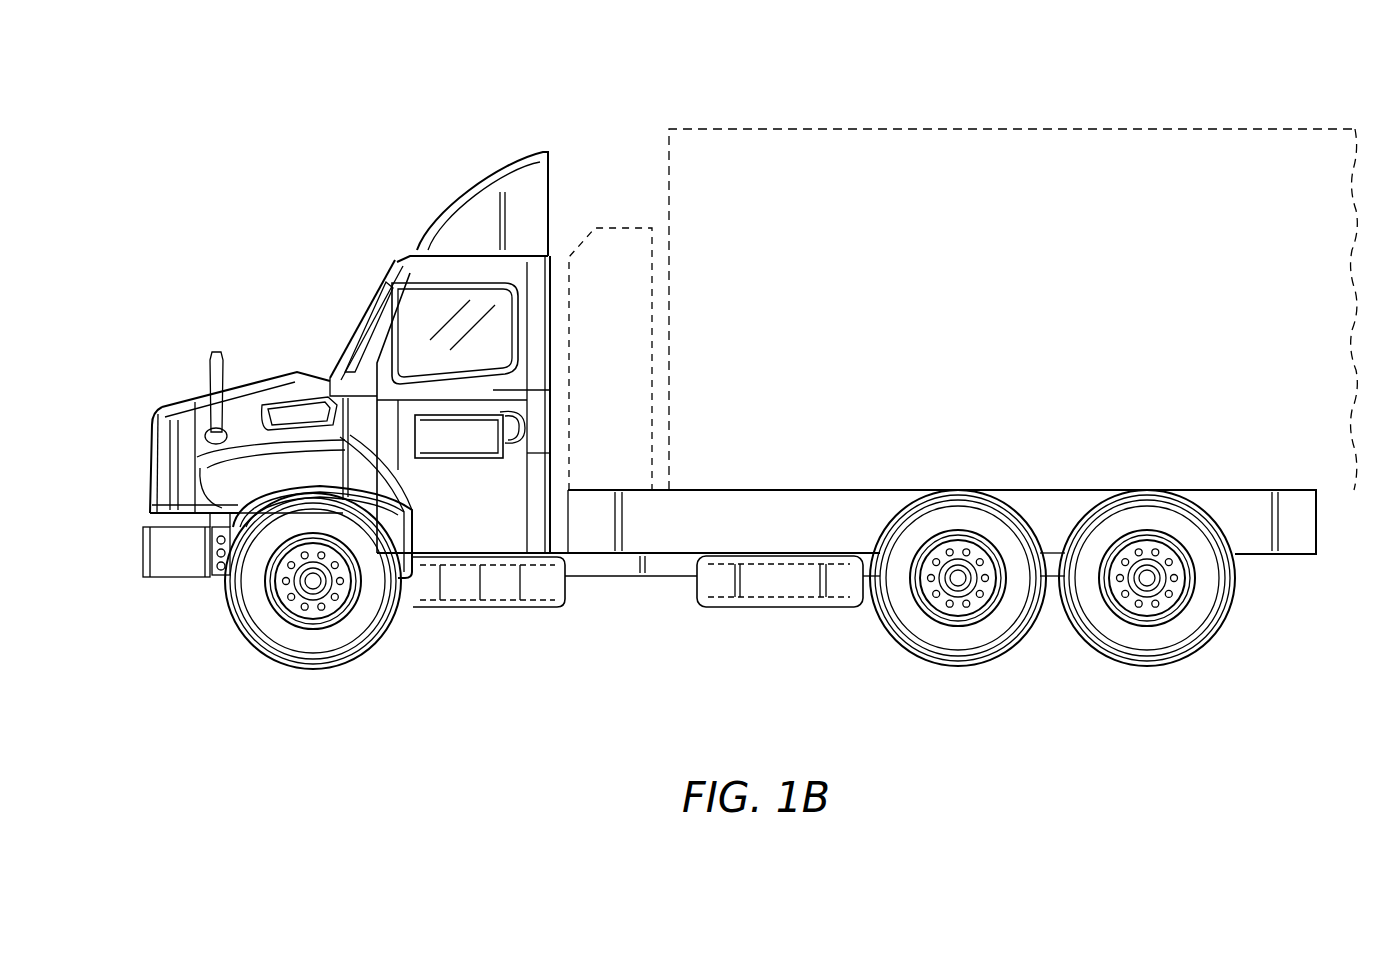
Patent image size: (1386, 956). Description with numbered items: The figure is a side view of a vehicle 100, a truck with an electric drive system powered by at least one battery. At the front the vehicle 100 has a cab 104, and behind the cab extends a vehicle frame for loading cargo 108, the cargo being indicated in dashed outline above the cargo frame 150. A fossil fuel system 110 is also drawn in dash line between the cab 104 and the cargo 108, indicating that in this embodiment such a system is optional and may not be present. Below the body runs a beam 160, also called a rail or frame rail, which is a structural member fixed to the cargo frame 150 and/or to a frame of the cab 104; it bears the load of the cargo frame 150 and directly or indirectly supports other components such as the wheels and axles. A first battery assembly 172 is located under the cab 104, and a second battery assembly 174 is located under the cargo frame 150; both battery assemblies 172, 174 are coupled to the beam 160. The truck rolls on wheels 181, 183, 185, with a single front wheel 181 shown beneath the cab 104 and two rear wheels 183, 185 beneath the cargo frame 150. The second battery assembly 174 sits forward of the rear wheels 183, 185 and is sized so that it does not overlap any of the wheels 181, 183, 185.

The vehicle 100 is at (236, 168).
The cab 104 is at (458, 458).
The cargo 108 is at (728, 127).
The fossil fuel system 110 is at (632, 226).
The cargo frame 150 is at (1300, 556).
The beam 160 is at (613, 577).
The first battery assembly 172 is at (567, 592).
The second battery assembly 174 is at (697, 593).
The wheel 181 is at (233, 618).
The rear wheel 183 is at (878, 640).
The rear wheel 185 is at (1073, 645).